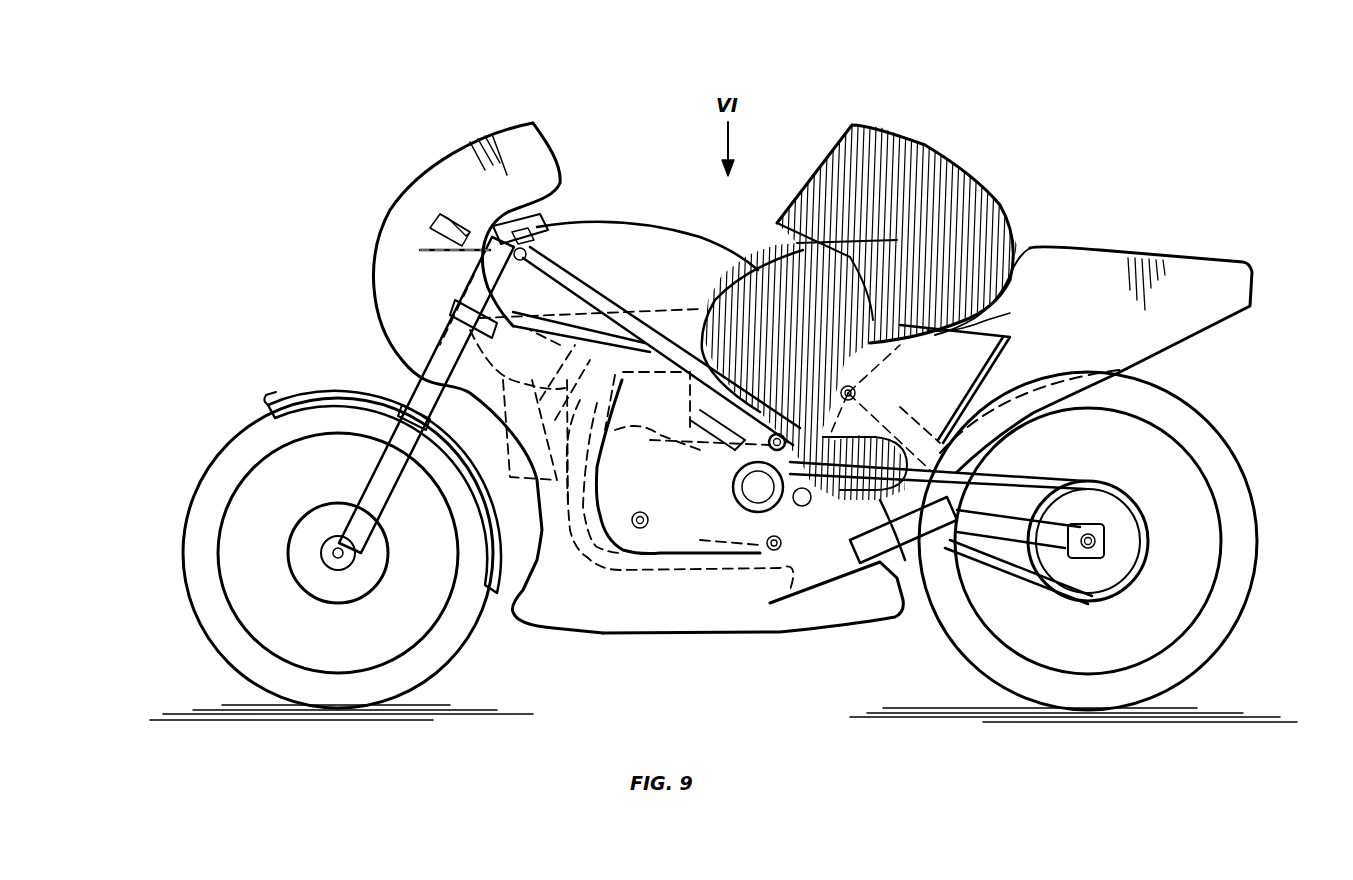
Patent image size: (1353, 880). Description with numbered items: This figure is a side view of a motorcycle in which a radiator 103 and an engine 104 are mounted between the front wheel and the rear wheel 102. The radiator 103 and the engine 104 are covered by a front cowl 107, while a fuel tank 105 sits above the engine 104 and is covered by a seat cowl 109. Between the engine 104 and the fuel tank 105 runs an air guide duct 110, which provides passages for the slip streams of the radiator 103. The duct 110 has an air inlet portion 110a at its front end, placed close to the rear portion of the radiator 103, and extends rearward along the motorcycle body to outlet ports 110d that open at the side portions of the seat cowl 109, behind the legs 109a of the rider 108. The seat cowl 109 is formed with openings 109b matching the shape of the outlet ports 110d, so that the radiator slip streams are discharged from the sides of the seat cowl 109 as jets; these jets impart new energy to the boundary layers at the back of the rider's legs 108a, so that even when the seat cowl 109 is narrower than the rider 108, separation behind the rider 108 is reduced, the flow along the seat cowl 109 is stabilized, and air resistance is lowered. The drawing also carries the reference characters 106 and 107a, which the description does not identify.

The rear wheel 102 is at (1242, 496).
The radiator 103 is at (456, 348).
The engine 104 is at (637, 483).
The fuel tank 105 is at (648, 232).
The lower cowling 106 is at (716, 615).
The front cowl 107 is at (383, 282).
The engine 107a is at (735, 458).
The rider 108 is at (975, 188).
The legs 108a is at (858, 396).
The seat cowl 109 is at (1170, 274).
The legs 109a is at (985, 323).
The openings 109b is at (1027, 407).
The air guide duct 110 is at (568, 410).
The air inlet portion 110a is at (428, 386).
The outlet ports 110d is at (1007, 352).